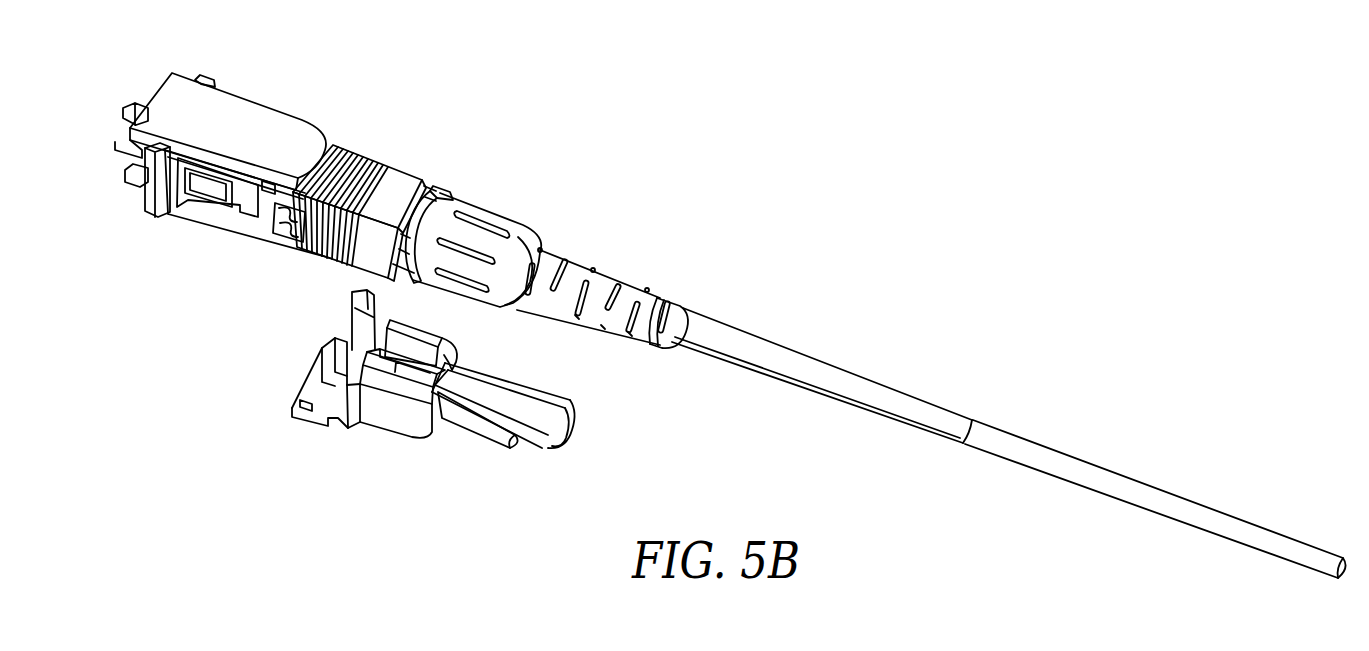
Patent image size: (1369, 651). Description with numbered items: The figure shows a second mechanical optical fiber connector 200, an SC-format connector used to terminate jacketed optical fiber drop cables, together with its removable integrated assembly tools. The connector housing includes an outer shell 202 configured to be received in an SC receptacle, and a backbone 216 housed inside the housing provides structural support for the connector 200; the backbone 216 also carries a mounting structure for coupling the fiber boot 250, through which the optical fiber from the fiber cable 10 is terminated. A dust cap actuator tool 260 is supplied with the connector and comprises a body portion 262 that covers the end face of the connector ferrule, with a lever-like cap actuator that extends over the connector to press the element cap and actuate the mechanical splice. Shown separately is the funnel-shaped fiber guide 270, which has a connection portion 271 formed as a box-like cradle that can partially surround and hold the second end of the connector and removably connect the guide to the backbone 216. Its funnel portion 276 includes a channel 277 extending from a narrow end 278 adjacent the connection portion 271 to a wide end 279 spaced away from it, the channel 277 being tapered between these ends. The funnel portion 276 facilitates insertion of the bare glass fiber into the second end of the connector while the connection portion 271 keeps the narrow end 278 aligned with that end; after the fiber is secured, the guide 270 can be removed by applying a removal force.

The optical fiber connector 200 is at (643, 116).
The dust cap actuator tool 260 is at (258, 88).
The body portion 262 is at (154, 201).
The outer shell 202 is at (366, 157).
The backbone 216 is at (430, 192).
The fiber boot 250 is at (562, 228).
The fiber cable 10 is at (1092, 463).
The funnel-shaped fiber guide 270 is at (382, 453).
The connection portion 271 is at (336, 426).
The funnel portion 276 is at (493, 447).
The channel 277 is at (480, 393).
The narrow end 278 is at (437, 336).
The wide end 279 is at (568, 440).